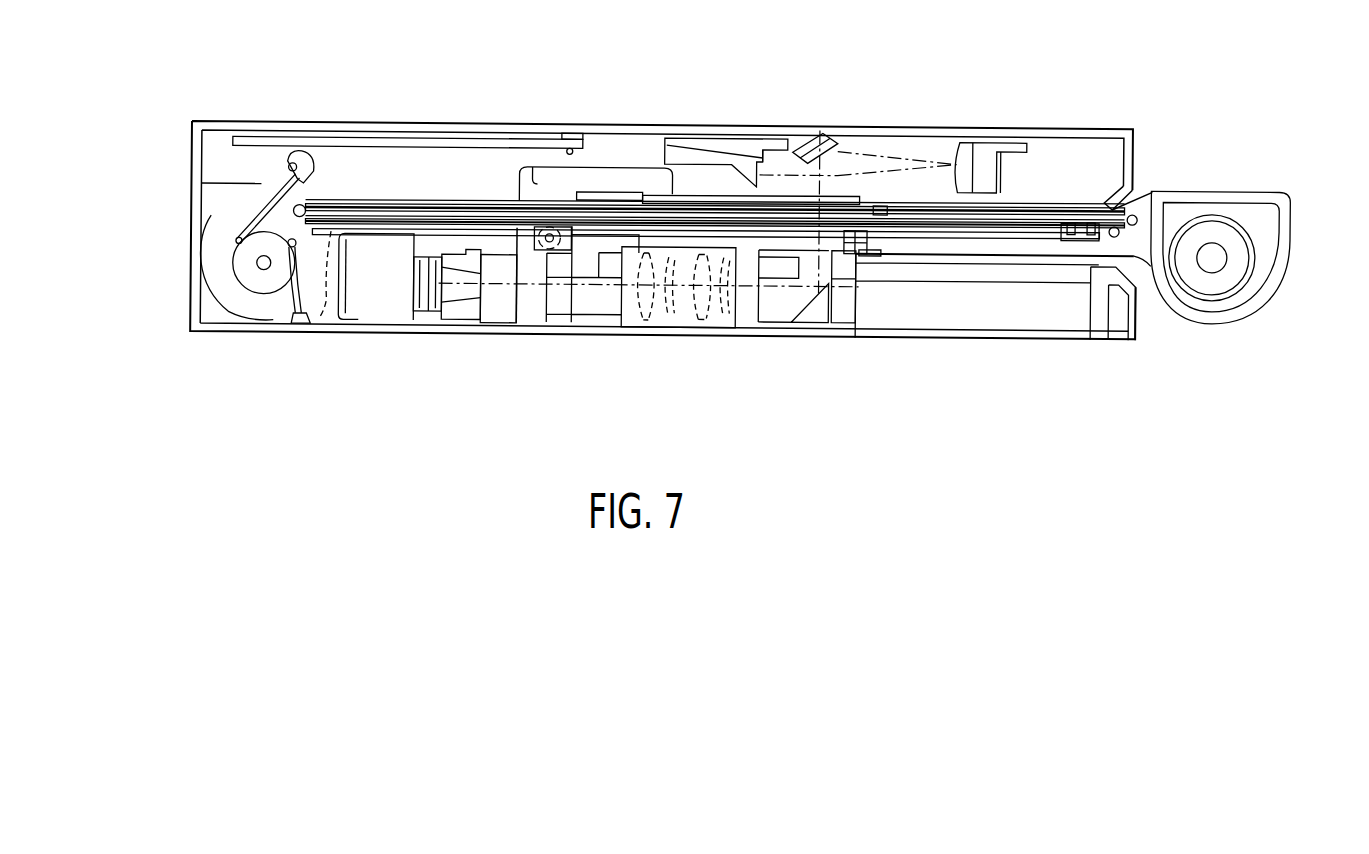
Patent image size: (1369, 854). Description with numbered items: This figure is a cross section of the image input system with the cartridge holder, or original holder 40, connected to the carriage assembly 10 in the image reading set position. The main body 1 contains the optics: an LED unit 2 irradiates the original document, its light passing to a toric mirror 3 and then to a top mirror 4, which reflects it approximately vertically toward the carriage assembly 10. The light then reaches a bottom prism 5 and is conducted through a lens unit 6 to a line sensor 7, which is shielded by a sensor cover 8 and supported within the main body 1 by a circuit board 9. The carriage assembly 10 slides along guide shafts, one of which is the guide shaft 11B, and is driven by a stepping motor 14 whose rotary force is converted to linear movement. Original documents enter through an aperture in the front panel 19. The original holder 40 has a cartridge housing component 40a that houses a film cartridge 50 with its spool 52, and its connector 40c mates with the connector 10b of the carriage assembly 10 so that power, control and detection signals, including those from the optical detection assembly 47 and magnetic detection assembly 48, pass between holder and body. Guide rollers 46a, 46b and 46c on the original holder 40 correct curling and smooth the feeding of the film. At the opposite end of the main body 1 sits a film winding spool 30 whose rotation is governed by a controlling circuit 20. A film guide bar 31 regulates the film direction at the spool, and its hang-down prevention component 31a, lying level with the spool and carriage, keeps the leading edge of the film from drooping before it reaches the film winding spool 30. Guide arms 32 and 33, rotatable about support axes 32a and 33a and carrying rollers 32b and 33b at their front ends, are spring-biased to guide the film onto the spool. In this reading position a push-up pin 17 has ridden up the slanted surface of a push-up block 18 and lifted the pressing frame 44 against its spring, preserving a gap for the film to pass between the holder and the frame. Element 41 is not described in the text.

The main body 1 is at (578, 336).
The LED unit 2 is at (716, 138).
The toric mirror 3 is at (967, 140).
The top mirror 4 is at (828, 145).
The bottom prism 5 is at (816, 318).
The lens unit 6 is at (680, 326).
The line sensor 7 is at (450, 319).
The sensor cover 8 is at (480, 322).
The circuit board 9 is at (416, 320).
The carriage assembly 10 is at (612, 200).
The connector 10b is at (870, 256).
The guide shaft 11B is at (1037, 276).
The stepping motor 14 is at (535, 168).
The push-up pin 17 is at (745, 242).
The push-up block 18 is at (748, 330).
The front panel 19 is at (1130, 158).
The controlling circuit 20 is at (470, 137).
The film winding spool 30 is at (270, 286).
The film guide bar 31 is at (218, 316).
The hang-down prevention component 31a is at (392, 201).
The guide arm 32 is at (262, 183).
The support axis 32a is at (295, 161).
The roller 32b is at (236, 238).
The guide arm 33 is at (300, 248).
The support axis 33a is at (303, 326).
The roller 33b is at (308, 244).
The original holder 40 is at (990, 247).
The cartridge housing component 40a is at (1287, 285).
The connector 40c is at (874, 256).
The grip 41 is at (1232, 191).
The pressing frame 44 is at (888, 205).
The guide roller 46a is at (1139, 215).
The guide roller 46b is at (1143, 250).
The guide roller 46c is at (302, 208).
The optical detection assembly 47 is at (1072, 224).
The magnetic detection assembly 48 is at (1092, 224).
The film cartridge 50 is at (1215, 300).
The spool 52 is at (1222, 260).